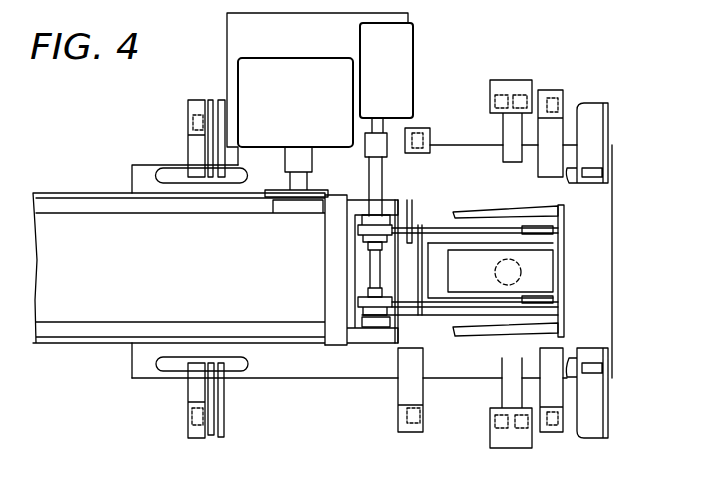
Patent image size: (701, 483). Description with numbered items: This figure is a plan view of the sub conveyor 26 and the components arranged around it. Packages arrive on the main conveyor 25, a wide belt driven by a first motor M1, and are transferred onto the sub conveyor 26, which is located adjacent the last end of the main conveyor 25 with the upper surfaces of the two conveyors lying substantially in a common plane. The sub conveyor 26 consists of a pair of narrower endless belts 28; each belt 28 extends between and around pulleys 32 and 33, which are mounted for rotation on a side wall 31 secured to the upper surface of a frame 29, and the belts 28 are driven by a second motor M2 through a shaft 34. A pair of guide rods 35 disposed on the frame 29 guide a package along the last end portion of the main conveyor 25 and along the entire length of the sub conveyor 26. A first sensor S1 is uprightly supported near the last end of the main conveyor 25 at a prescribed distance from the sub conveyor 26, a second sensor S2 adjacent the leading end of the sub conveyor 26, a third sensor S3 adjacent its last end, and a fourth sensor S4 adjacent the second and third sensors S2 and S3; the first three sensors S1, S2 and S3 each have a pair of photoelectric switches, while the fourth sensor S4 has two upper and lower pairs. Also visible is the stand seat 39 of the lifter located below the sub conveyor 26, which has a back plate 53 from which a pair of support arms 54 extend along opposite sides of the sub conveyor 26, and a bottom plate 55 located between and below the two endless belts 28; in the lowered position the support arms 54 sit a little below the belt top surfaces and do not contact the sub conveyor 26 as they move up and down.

The main conveyor 25 is at (110, 230).
The sub conveyor 26 is at (378, 340).
The endless belts 28 is at (360, 300).
The frame 29 is at (595, 195).
The side wall 31 is at (408, 222).
The pulley 32 is at (550, 231).
The pulley 33 is at (365, 232).
The shaft 34 is at (372, 185).
The guide rods 35 is at (178, 171).
The stand seat 39 is at (570, 293).
The back plate 53 is at (563, 245).
The support arms 54 is at (477, 207).
The bottom plate 55 is at (548, 273).
The first motor M1 is at (255, 77).
The second motor M2 is at (395, 40).
The first sensor S1 is at (194, 118).
The second sensor S2 is at (421, 128).
The third sensor S3 is at (553, 98).
The fourth sensor S4 is at (520, 96).